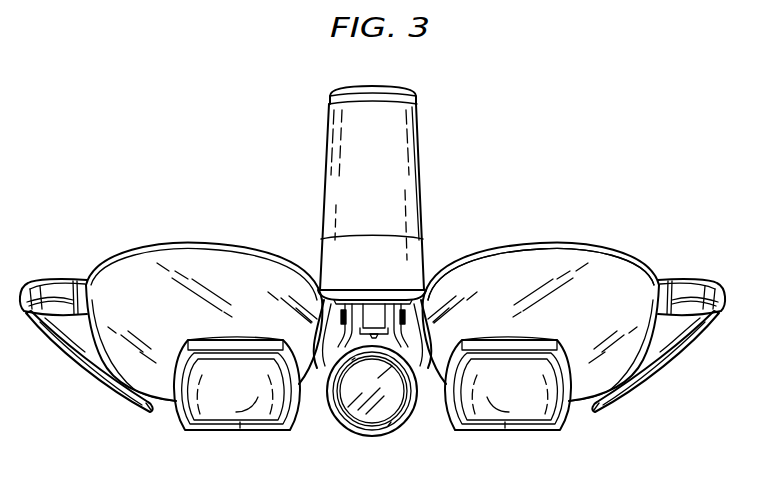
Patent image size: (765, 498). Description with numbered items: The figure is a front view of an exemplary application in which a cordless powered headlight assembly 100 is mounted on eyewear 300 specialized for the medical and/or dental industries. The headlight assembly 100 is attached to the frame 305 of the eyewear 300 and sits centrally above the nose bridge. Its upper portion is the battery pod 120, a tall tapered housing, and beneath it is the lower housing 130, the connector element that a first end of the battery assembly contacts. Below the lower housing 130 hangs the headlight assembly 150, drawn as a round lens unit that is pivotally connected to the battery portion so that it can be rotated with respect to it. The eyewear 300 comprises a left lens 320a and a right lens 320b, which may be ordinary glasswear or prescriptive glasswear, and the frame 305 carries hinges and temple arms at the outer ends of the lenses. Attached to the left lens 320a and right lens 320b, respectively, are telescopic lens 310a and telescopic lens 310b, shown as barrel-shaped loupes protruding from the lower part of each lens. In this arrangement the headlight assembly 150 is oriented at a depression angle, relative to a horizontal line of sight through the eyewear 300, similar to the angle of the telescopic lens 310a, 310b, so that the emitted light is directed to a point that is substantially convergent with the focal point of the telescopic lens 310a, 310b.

The cordless headlight assembly 100 is at (303, 122).
The battery pod 120 is at (405, 150).
The lower housing 130 is at (428, 258).
The headlight assembly 150 is at (337, 425).
The eyewear 300 is at (585, 245).
The frame 305 is at (540, 245).
The telescopic lens 310a is at (233, 430).
The telescopic lens 310b is at (517, 430).
The left lens 320a is at (115, 277).
The right lens 320b is at (630, 277).